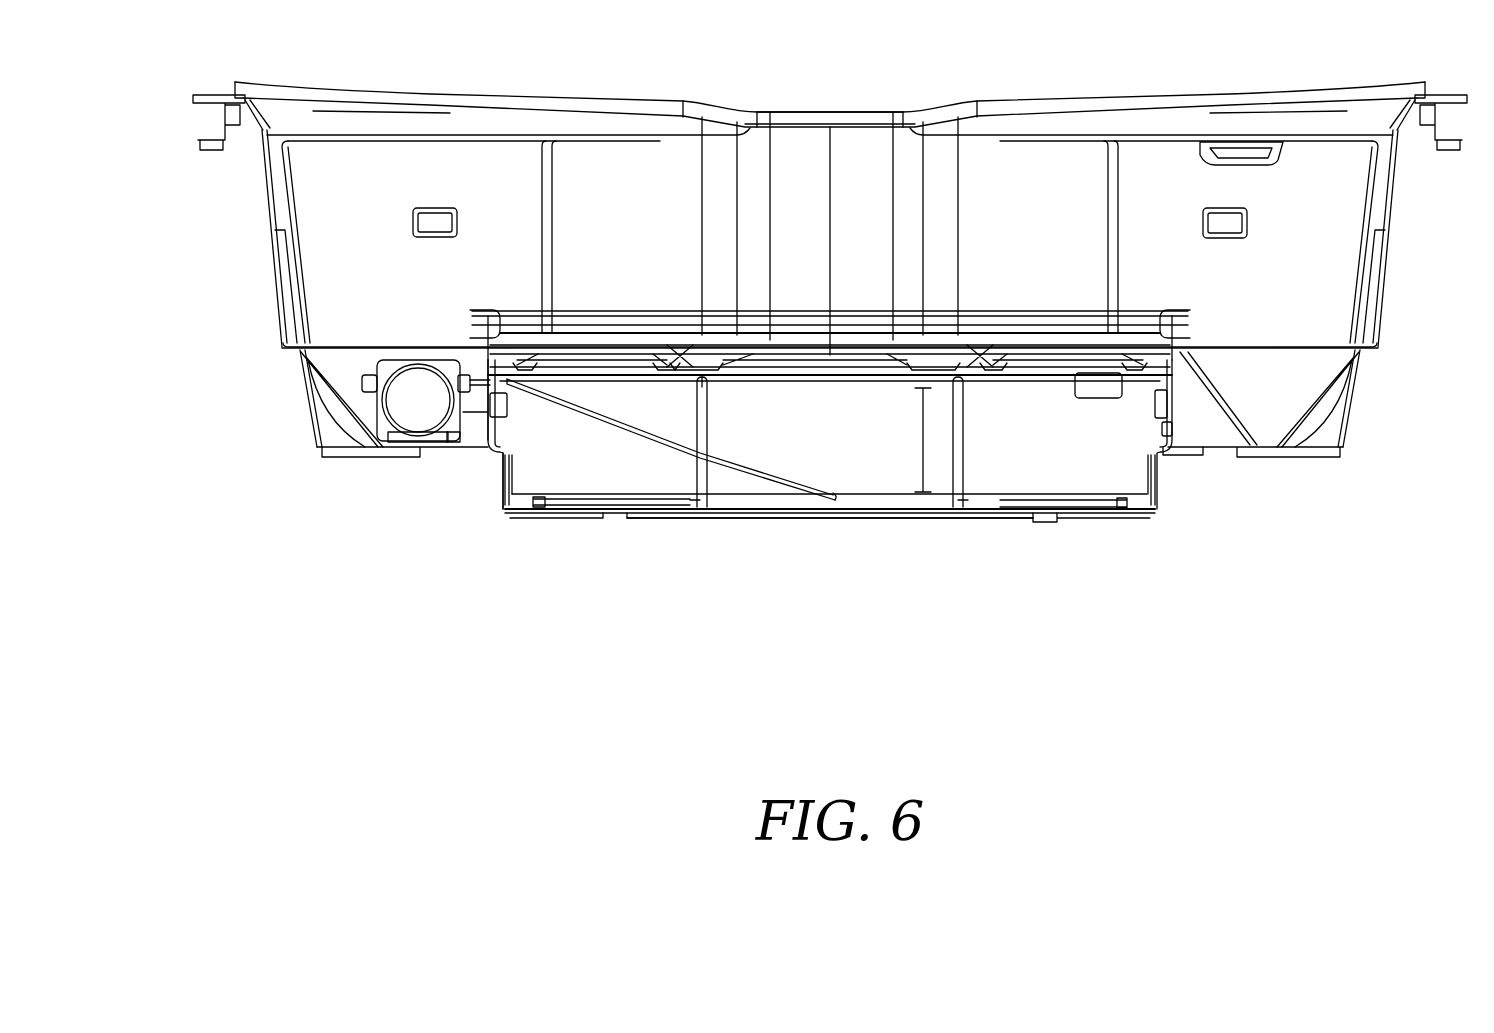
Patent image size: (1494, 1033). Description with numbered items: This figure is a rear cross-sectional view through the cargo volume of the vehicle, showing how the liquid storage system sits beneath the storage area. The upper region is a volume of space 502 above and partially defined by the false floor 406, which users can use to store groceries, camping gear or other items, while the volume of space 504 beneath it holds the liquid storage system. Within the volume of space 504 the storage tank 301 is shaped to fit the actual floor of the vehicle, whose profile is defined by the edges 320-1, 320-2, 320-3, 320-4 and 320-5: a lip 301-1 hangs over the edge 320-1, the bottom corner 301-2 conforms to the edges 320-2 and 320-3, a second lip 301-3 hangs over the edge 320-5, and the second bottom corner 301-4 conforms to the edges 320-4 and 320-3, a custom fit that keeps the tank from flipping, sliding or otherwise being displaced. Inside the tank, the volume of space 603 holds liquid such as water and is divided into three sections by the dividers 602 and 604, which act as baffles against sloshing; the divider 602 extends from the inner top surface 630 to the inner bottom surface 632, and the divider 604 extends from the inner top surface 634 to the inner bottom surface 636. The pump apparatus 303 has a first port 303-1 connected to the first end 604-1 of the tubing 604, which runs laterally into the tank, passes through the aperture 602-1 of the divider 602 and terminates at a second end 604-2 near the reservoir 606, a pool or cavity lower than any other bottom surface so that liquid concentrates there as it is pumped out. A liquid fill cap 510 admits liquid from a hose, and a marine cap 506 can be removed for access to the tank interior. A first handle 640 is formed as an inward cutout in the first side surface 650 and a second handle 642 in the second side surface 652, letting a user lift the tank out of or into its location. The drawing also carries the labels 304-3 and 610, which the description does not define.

The storage tank 301 is at (887, 357).
The lip 301-1 is at (497, 443).
The bottom corner 301-2 is at (517, 511).
The second lip 301-3 is at (1162, 447).
The second bottom corner 301-4 is at (1133, 511).
The pump apparatus 303 is at (393, 440).
The first port 303-1 is at (463, 347).
The top wall 304-3 is at (817, 112).
The edge of actual floor 320-1 is at (347, 458).
The edge of actual floor 320-2 is at (502, 490).
The edge of actual floor 320-3 is at (770, 519).
The edge of actual floor 320-4 is at (1162, 484).
The edge of actual floor 320-5 is at (1300, 458).
The false floor 406 is at (301, 352).
The volume of space 502 is at (175, 97).
The volume of space 504 is at (175, 355).
The marine cap 506 is at (597, 357).
The liquid fill cap 510 is at (1078, 398).
The divider 602 is at (709, 473).
The aperture 602-1 is at (727, 470).
The volume of space 603 is at (923, 411).
The tubing 604 is at (605, 502).
The first end of tubing 604-1 is at (503, 332).
The second end of tubing 604-2 is at (843, 497).
The reservoir 606 is at (840, 500).
The bottom rail 610 is at (892, 518).
The inner top surface 630 is at (683, 357).
The inner bottom surface 632 is at (693, 509).
The inner top surface 634 is at (977, 357).
The inner bottom surface 636 is at (963, 511).
The first handle 640 is at (1160, 318).
The second handle 642 is at (492, 308).
The first side surface 650 is at (1173, 430).
The second side surface 652 is at (487, 432).